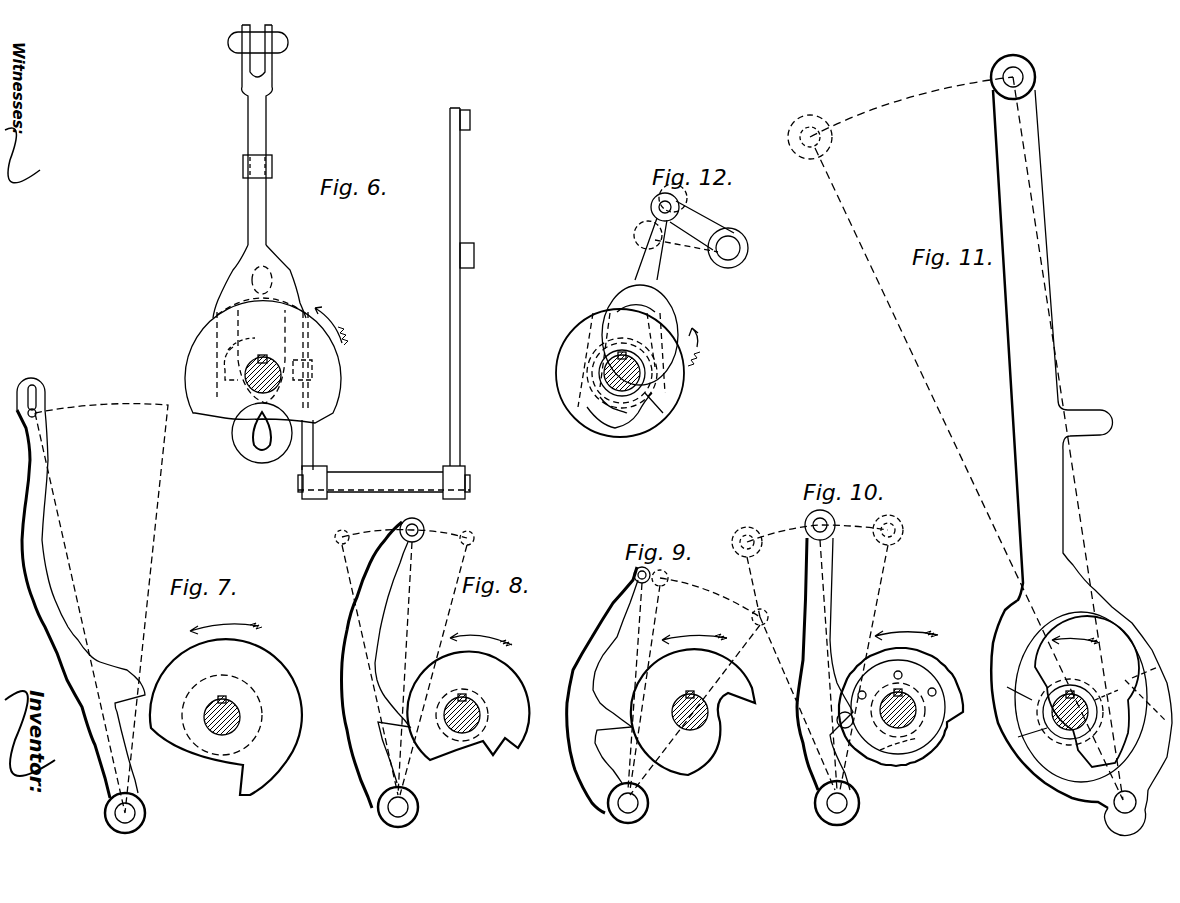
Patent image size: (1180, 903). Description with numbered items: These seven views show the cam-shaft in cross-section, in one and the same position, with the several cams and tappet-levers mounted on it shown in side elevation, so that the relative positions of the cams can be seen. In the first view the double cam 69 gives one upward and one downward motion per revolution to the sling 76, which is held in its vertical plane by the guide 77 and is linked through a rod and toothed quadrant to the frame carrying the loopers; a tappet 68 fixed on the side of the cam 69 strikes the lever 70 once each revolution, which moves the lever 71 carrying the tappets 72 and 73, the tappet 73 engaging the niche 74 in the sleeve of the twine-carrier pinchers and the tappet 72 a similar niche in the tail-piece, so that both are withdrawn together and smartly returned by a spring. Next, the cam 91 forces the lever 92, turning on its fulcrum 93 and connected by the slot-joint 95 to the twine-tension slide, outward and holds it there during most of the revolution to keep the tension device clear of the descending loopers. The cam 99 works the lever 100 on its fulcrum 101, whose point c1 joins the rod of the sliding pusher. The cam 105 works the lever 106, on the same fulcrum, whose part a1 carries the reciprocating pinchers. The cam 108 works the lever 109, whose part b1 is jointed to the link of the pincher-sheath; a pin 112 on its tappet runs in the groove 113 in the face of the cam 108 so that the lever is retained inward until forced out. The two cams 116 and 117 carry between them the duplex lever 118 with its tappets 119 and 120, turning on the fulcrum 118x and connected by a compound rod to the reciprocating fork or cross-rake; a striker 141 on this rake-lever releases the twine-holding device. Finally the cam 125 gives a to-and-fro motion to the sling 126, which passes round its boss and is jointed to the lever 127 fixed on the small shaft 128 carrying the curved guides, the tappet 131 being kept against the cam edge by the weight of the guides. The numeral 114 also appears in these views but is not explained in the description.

In FIG. 6, the tappet 68 is at (243, 345).
In FIG. 6, the double cam 69 is at (260, 363).
In FIG. 6, the lever 70 is at (384, 459).
In FIG. 6, the lever 71 is at (458, 350).
In FIG. 6, the tappet 72 is at (477, 256).
In FIG. 6, the tappet 73 is at (475, 120).
In FIG. 6, the niche 74 is at (272, 387).
In FIG. 7, the niche 74 is at (220, 730).
In FIG. 8, the niche 74 is at (462, 730).
In FIG. 9, the niche 74 is at (678, 716).
In FIG. 10, the niche 74 is at (922, 718).
In FIG. 11, the niche 74 is at (1066, 730).
In FIG. 12, the niche 74 is at (642, 377).
In FIG. 6, the sling 76 is at (266, 244).
In FIG. 6, the guide 77 is at (272, 170).
In FIG. 7, the cam 91 is at (226, 709).
In FIG. 7, the lever 92 is at (92, 608).
In FIG. 7, the fulcrum 93 is at (124, 823).
In FIG. 7, the slot-joint 95 is at (40, 402).
In FIG. 8, the cam 99 is at (468, 696).
In FIG. 8, the lever 100 is at (404, 665).
In FIG. 8, the fulcrum 101 is at (395, 818).
In FIG. 9, the fulcrum 101 is at (625, 815).
In FIG. 10, the fulcrum 101 is at (834, 816).
In FIG. 9, the cam 105 is at (693, 704).
In FIG. 9, the lever 106 is at (667, 690).
In FIG. 10, the cam 108 is at (901, 698).
In FIG. 10, the lever 109 is at (817, 652).
In FIG. 10, the pin 112 is at (845, 714).
In FIG. 10, the groove 113 is at (901, 746).
In FIG. 11, the pin 114 is at (1090, 724).
In FIG. 11, the cam 116 is at (1108, 691).
In FIG. 11, the cam 117 is at (1087, 691).
In FIG. 11, the duplex lever 118 is at (980, 445).
In FIG. 11, the fulcrum 118x is at (1120, 812).
In FIG. 11, the tappet 119 is at (1145, 693).
In FIG. 11, the tappet 120 is at (1027, 712).
In FIG. 12, the cam 125 is at (628, 373).
In FIG. 12, the sling 126 is at (660, 284).
In FIG. 12, the lever 127 is at (702, 225).
In FIG. 12, the small shaft 128 is at (740, 249).
In FIG. 12, the tappet 131 is at (625, 416).
In FIG. 11, the striker 141 is at (1084, 427).
In FIG. 9, the part of lever a1 is at (636, 572).
In FIG. 10, the part of lever b1 is at (835, 530).
In FIG. 8, the connection point c1 is at (422, 527).